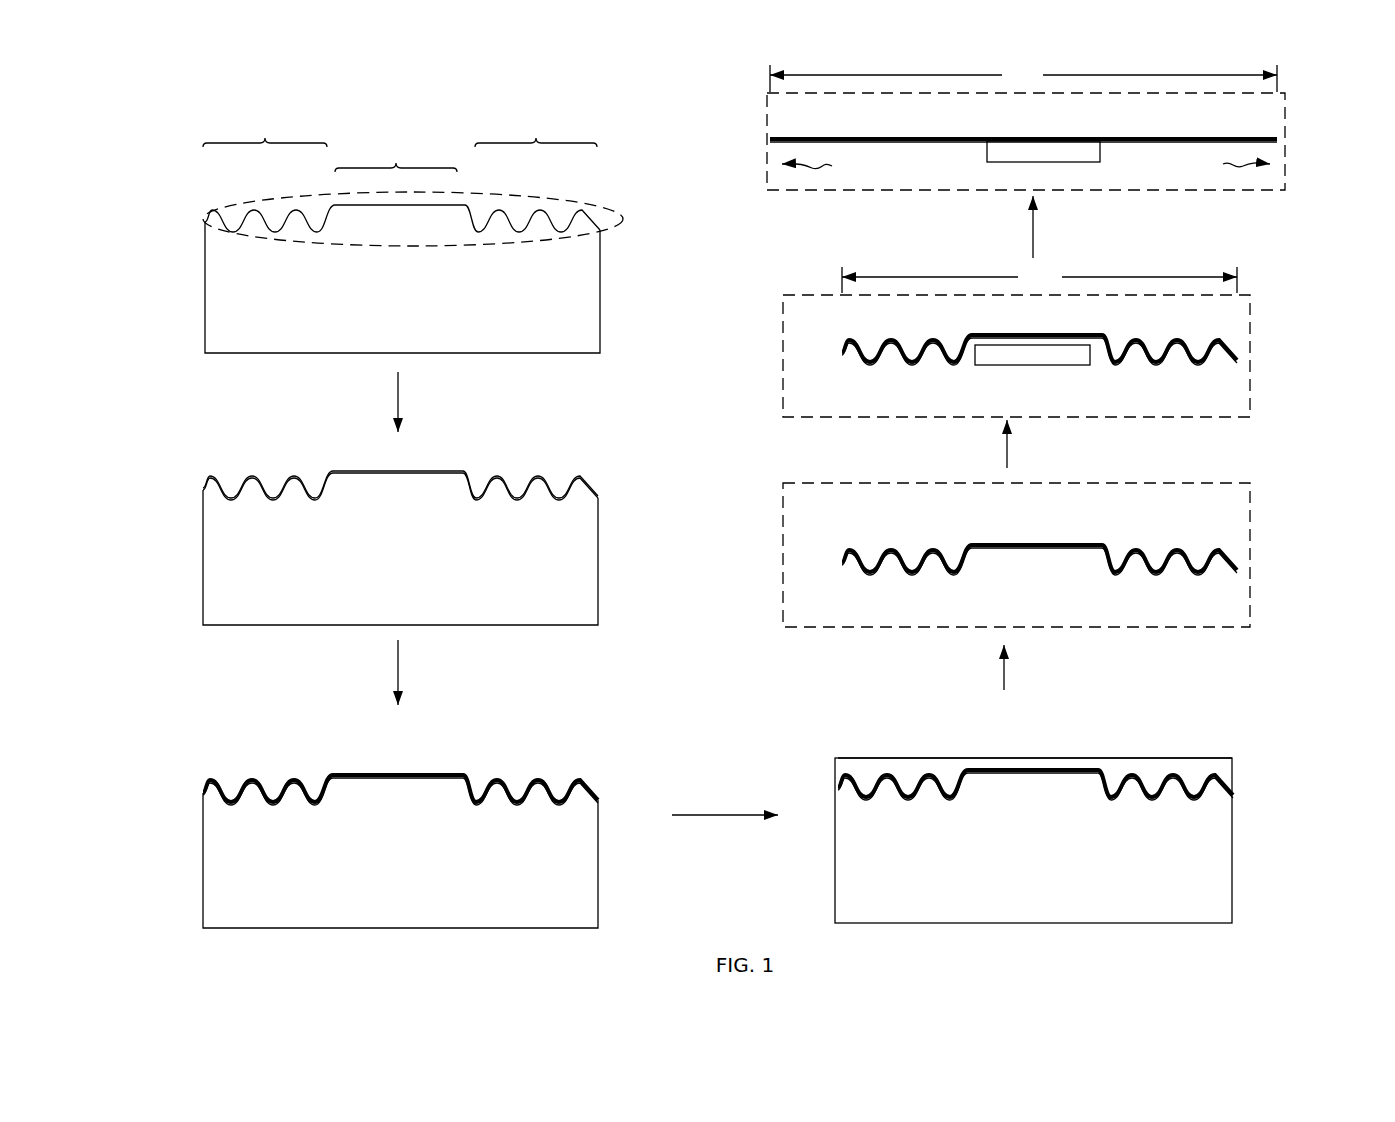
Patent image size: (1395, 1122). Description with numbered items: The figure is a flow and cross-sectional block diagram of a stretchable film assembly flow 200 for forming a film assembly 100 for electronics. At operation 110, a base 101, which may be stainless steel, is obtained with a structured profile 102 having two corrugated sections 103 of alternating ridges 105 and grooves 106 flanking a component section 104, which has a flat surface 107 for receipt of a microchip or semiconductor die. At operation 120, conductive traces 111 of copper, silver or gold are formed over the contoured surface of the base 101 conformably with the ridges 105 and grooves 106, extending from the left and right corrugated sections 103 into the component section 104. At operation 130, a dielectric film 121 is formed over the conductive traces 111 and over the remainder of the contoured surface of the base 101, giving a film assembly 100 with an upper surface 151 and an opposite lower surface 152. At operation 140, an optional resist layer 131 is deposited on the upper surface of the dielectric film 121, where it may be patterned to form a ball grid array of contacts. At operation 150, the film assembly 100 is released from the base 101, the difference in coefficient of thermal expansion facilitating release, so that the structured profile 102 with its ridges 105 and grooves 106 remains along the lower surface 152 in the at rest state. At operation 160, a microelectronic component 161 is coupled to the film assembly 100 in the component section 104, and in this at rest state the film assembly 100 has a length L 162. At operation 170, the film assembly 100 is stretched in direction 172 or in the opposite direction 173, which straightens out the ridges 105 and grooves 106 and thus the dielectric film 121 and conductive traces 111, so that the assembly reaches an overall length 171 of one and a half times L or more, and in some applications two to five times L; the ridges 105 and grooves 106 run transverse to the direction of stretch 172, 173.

The film assembly 100 is at (1251, 604).
The base 101 is at (601, 288).
The structured profile 102 is at (262, 237).
The corrugated section 103 is at (400, 100).
The component section 104 is at (396, 124).
The ridge 105 is at (294, 205).
The groove 106 is at (565, 218).
The flat surface 107 is at (418, 204).
The operation 110 is at (620, 179).
The conductive trace 111 is at (1112, 846).
The operation 120 is at (628, 464).
The dielectric film 121 is at (350, 778).
The operation 130 is at (630, 724).
The resist layer 131 is at (1138, 758).
The operation 140 is at (1238, 719).
The operation 150 is at (1236, 464).
The upper surface 151 is at (876, 542).
The lower surface 152 is at (957, 595).
The operation 160 is at (1246, 270).
The microelectronic component 161 is at (1027, 366).
The length L 162 is at (1039, 279).
The operation 170 is at (1300, 89).
The overall length 171 is at (1023, 77).
The direction 172 is at (845, 165).
The direction 173 is at (1225, 165).
The stretchable film assembly flow 200 is at (190, 94).